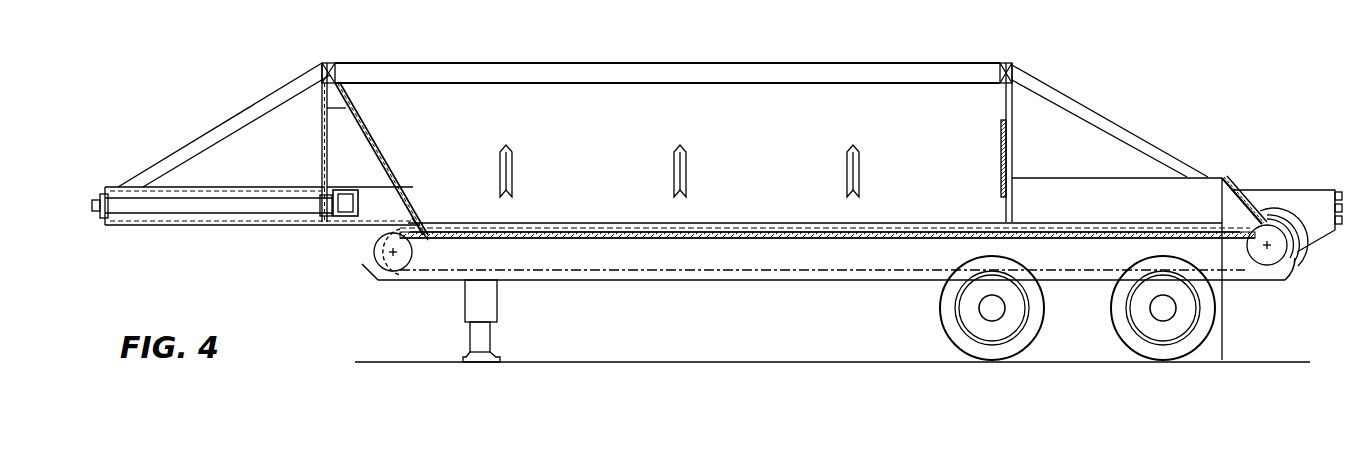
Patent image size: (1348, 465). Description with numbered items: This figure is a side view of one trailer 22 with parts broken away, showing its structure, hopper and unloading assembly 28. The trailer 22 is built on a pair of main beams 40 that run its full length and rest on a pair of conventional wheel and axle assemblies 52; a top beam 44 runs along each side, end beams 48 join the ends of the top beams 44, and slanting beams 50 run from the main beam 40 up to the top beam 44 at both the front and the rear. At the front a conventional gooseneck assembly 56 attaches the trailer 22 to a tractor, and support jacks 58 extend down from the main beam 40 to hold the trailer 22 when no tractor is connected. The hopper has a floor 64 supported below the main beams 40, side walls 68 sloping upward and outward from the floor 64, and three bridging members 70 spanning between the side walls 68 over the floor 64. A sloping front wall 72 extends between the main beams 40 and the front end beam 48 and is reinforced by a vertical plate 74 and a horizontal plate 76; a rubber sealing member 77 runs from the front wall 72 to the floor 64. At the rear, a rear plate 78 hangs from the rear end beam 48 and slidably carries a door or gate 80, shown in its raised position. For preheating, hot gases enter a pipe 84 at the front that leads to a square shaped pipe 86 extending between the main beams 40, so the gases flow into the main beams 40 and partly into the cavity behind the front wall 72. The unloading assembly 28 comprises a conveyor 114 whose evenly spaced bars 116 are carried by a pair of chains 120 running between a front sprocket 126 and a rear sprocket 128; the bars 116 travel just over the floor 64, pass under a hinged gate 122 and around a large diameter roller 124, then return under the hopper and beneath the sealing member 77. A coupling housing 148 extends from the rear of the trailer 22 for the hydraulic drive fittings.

The trailer 22 is at (370, 58).
The top beam 44 is at (443, 70).
The end beam 48 is at (320, 64).
The slanting beam 50 is at (223, 128).
The plate 74 is at (321, 133).
The front wall 72 is at (362, 131).
The rubber sealing member 77 is at (418, 222).
The main beam 40 is at (232, 215).
The pipe 84 is at (233, 205).
The gooseneck assembly 56 is at (138, 232).
The plate 76 is at (296, 224).
The square shaped pipe 86 is at (358, 205).
The rear plate 78 is at (1005, 95).
The door or gate 80 is at (1003, 150).
The side wall 68 is at (763, 131).
The bridging member 70 is at (512, 155).
The conveyor 114 is at (584, 221).
The bar 116 is at (712, 226).
The chain 120 is at (650, 238).
The floor 64 is at (572, 241).
The sprocket 126 is at (366, 272).
The unloading assembly 28 is at (1296, 279).
The sprocket 128 is at (1263, 278).
The support jack 58 is at (485, 306).
The wheel and axle assembly 52 is at (930, 316).
The roller 124 is at (1274, 246).
The gate 122 is at (1243, 188).
The coupling housing 148 is at (1300, 190).